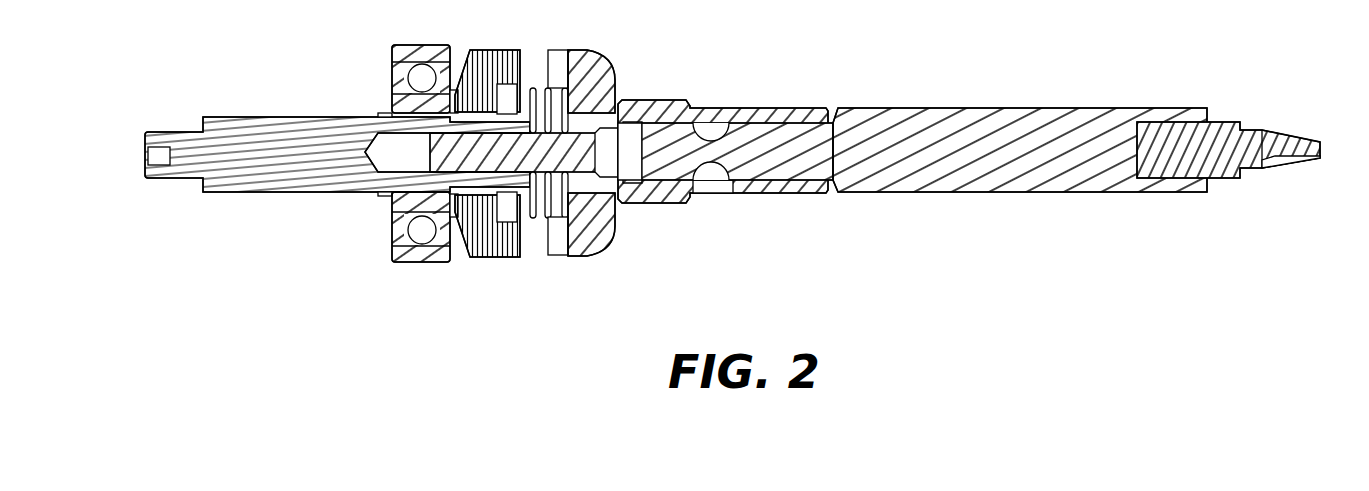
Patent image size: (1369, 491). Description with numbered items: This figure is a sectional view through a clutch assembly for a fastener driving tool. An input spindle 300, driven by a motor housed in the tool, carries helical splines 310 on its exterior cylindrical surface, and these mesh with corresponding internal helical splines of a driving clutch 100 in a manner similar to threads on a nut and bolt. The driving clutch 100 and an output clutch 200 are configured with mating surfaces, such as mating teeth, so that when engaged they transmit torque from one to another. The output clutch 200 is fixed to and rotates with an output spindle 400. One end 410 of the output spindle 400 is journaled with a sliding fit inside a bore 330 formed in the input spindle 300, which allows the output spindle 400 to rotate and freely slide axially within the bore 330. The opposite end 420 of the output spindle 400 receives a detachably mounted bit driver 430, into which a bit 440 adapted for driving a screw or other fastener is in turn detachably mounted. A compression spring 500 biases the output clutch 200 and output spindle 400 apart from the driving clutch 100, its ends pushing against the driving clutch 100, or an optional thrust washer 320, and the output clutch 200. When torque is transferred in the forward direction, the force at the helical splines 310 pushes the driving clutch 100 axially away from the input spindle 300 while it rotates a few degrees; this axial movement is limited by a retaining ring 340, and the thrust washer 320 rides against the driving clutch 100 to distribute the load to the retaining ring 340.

The driving clutch 100 is at (512, 258).
The output clutch 200 is at (578, 258).
The input spindle 300 is at (285, 193).
The helical splines 310 is at (415, 262).
The thrust washer 320 is at (475, 258).
The bore 330 is at (382, 115).
The retaining ring 340 is at (510, 60).
The output spindle 400 is at (765, 193).
The end of output spindle 410 is at (455, 100).
The end of output spindle 420 is at (780, 108).
The bit driver 430 is at (980, 193).
The bit 440 is at (1228, 180).
The compression spring 500 is at (548, 232).